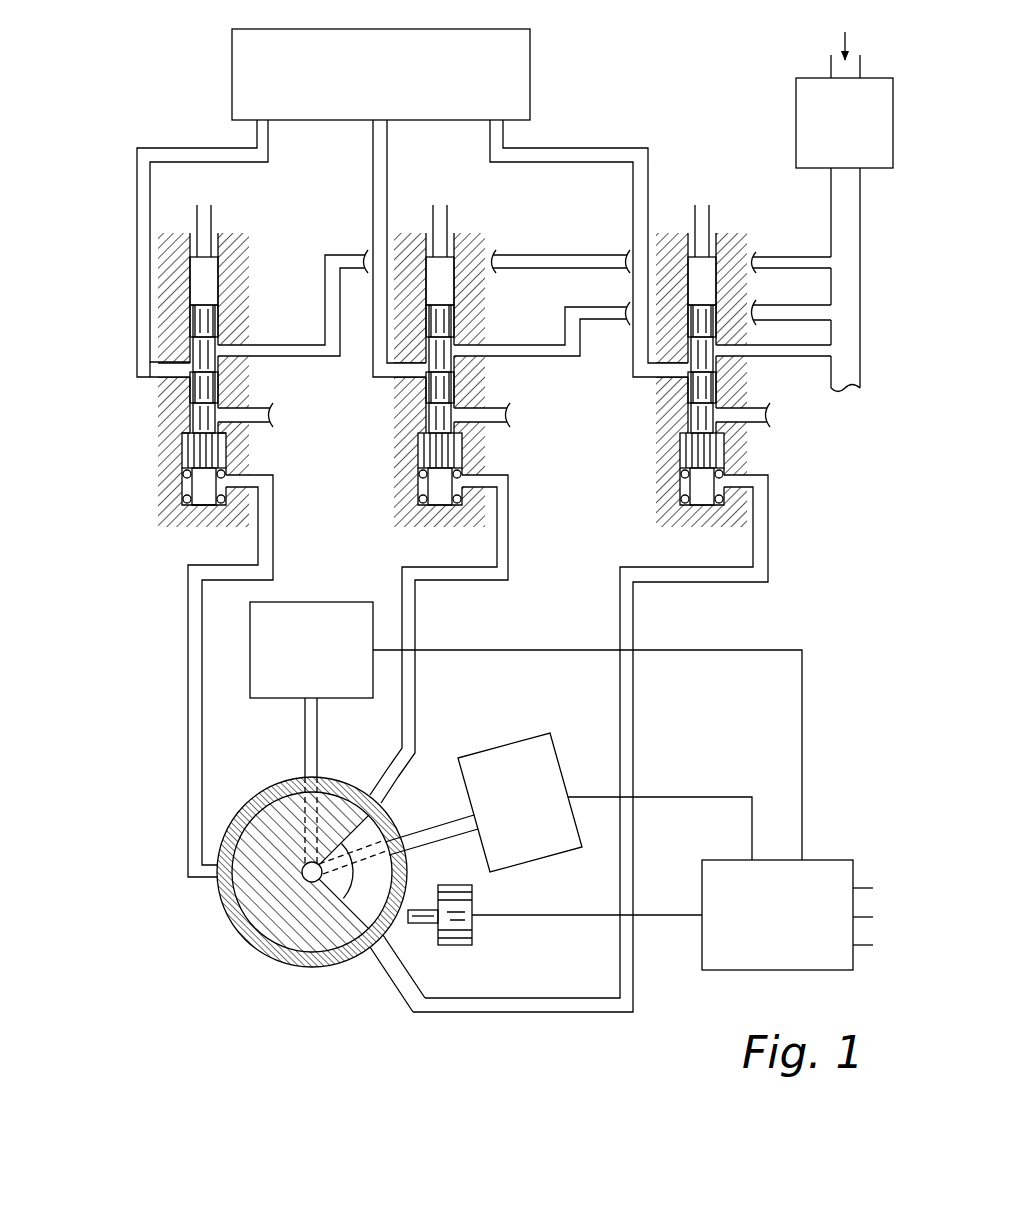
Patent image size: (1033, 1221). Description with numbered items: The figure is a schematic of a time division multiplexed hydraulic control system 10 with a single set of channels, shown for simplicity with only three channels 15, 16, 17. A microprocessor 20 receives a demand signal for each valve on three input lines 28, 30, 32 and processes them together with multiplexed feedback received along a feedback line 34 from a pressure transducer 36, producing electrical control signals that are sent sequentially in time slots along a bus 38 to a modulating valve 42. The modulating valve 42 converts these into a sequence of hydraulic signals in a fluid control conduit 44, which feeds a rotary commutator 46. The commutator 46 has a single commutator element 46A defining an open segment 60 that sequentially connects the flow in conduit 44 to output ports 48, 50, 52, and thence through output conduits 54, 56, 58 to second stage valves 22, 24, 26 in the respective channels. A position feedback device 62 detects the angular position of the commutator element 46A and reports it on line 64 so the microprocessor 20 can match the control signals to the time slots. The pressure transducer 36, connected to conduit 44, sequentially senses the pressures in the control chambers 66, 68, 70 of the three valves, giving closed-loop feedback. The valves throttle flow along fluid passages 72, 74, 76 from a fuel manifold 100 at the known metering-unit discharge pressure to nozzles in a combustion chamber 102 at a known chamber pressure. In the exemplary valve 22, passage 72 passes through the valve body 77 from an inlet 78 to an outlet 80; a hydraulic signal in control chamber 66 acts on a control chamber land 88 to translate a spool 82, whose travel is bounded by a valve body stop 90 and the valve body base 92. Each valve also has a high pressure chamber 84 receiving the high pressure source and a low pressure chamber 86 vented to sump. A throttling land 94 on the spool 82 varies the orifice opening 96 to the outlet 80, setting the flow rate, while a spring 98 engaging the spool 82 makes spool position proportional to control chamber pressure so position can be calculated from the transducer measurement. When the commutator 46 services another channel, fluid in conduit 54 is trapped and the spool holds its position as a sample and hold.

The time division multiplexed hydraulic control system 10 is at (130, 965).
The channel 15 is at (128, 675).
The channel 16 is at (447, 620).
The channel 17 is at (680, 622).
The microprocessor 20 is at (765, 960).
The second stage valve 22 is at (193, 405).
The second stage valve 24 is at (460, 370).
The second stage valve 26 is at (720, 367).
The input line 28 is at (874, 889).
The input line 30 is at (874, 918).
The input line 32 is at (874, 946).
The feedback line 34 is at (730, 797).
The pressure transducer 36 is at (483, 802).
The bus 38 is at (803, 742).
The modulating valve 42 is at (299, 690).
The fluid control conduit 44 is at (305, 733).
The rotary commutator 46 is at (312, 892).
The commutator element 46A is at (257, 833).
The output port 48 is at (222, 870).
The output port 50 is at (385, 783).
The output port 52 is at (368, 946).
The output conduit 54 is at (187, 790).
The output conduit 56 is at (416, 734).
The output conduit 58 is at (538, 1013).
The open segment 60 is at (348, 899).
The position feedback device 62 is at (457, 946).
The line 64 is at (545, 915).
The control chamber 66 is at (205, 490).
The control chamber 68 is at (436, 488).
The control chamber 70 is at (700, 486).
The fluid passage 72 is at (266, 127).
The fluid passage 74 is at (385, 172).
The fluid passage 76 is at (634, 186).
The valve body 77 is at (236, 270).
The inlet 78 is at (281, 348).
The outlet 80 is at (150, 376).
The spool 82 is at (196, 355).
The high pressure chamber 84 is at (270, 390).
The low pressure chamber 86 is at (205, 265).
The control chamber land 88 is at (207, 455).
The valve body stop 90 is at (179, 428).
The valve body base 92 is at (198, 507).
The throttling land 94 is at (160, 393).
The orifice opening 96 is at (153, 372).
The spring 98 is at (228, 507).
The fuel manifold 100 is at (880, 283).
The combustion chamber 102 is at (366, 59).